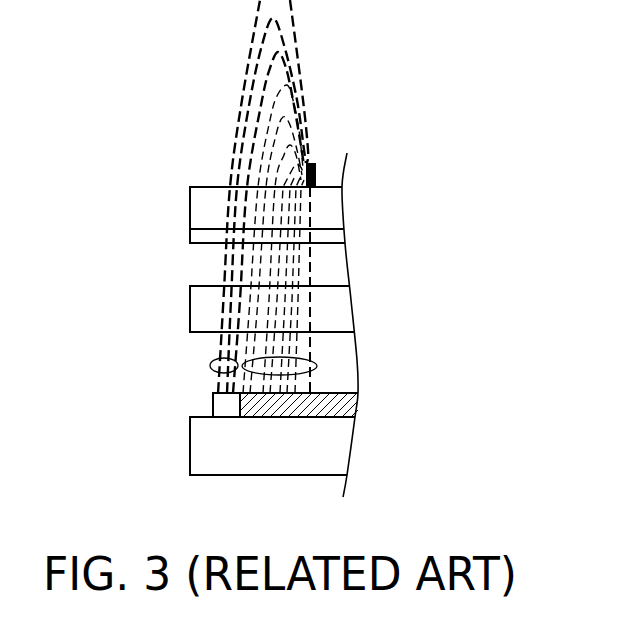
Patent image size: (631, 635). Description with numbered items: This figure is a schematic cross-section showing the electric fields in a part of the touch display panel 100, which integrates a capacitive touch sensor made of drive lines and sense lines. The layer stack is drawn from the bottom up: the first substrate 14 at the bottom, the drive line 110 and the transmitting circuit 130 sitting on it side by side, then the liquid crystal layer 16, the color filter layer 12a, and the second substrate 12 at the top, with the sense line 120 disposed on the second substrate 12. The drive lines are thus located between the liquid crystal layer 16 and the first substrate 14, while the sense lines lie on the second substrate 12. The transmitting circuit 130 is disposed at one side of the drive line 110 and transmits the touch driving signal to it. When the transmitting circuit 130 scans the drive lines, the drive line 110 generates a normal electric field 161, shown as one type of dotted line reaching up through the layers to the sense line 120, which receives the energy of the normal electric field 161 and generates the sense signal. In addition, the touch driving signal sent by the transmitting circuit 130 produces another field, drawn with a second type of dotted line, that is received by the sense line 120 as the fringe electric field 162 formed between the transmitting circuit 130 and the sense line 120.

The touch display panel 100 is at (457, 505).
The drive line 110 is at (357, 405).
The sense line 120 is at (318, 168).
The transmitting circuit 130 is at (213, 401).
The second substrate 12 is at (198, 210).
The color filter layer 12a is at (198, 237).
The first substrate 14 is at (205, 455).
The liquid crystal layer 16 is at (205, 308).
The normal electric field 161 is at (317, 366).
The fringe electric field 162 is at (210, 364).